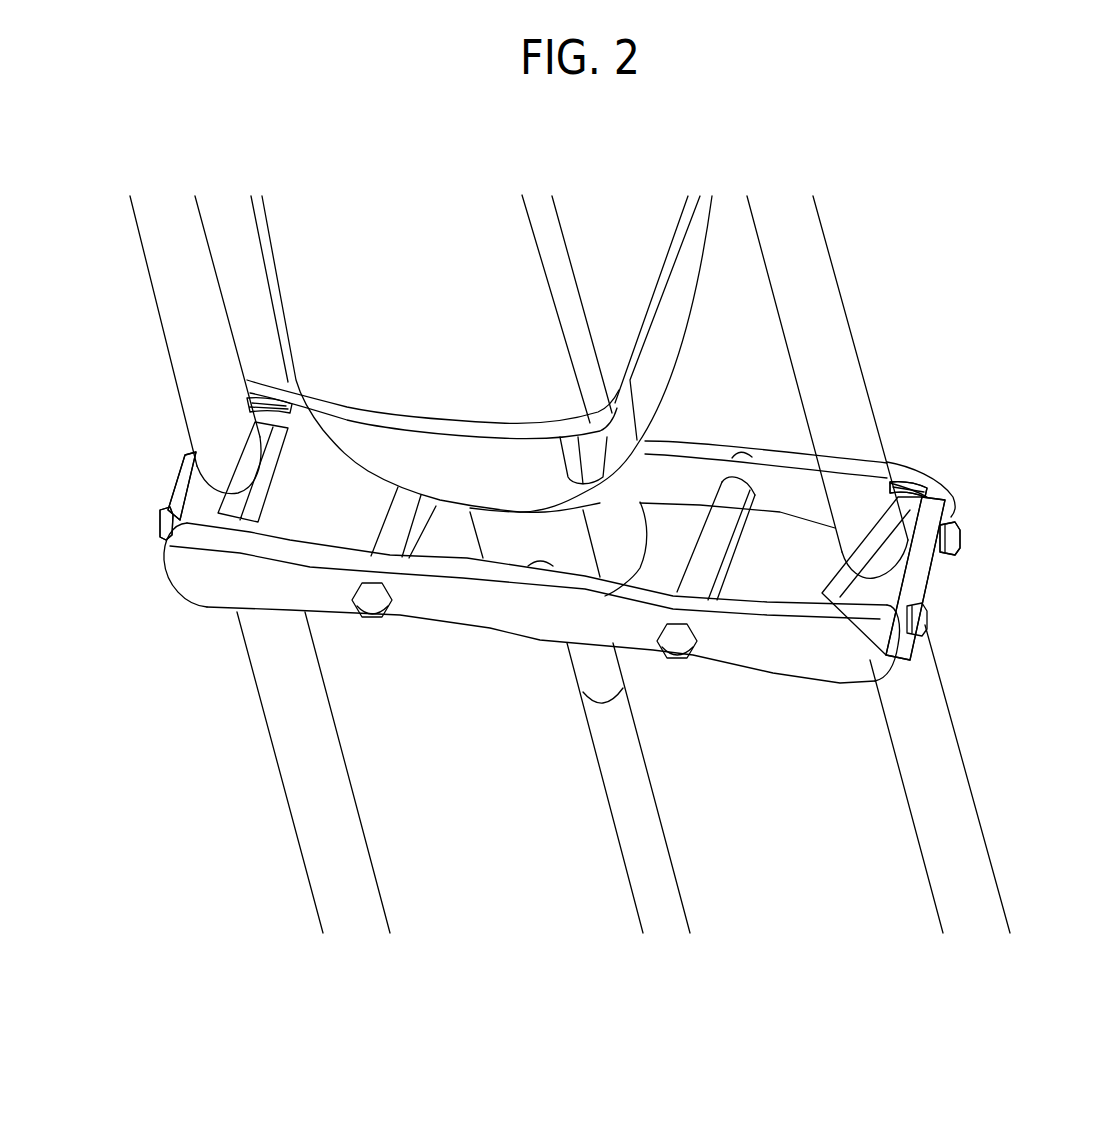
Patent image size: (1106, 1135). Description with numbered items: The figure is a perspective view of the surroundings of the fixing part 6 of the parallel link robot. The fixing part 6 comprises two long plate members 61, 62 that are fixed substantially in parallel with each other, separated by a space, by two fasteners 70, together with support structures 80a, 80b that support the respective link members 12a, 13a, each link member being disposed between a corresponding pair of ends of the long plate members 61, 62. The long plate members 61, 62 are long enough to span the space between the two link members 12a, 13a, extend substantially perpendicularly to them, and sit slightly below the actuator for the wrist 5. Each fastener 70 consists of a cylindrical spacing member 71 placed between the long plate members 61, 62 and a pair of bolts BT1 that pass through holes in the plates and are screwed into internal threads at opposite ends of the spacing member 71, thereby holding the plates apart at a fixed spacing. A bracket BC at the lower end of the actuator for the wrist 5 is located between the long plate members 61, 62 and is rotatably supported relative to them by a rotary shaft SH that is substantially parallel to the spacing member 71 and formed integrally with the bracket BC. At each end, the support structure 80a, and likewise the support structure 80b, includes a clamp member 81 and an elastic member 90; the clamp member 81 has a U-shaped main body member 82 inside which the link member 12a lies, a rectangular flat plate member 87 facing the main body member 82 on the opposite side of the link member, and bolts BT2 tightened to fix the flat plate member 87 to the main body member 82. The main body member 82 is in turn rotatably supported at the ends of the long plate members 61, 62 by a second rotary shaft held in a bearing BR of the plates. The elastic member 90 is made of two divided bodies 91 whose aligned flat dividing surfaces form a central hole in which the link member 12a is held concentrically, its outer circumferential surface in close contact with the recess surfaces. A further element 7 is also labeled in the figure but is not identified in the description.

The actuator for the wrist 5 is at (437, 245).
The fixing part 6 is at (897, 401).
The shaft 7 is at (663, 868).
The link member 12a is at (807, 271).
The link member 13a is at (182, 298).
The long plate member 61 is at (812, 660).
The long plate member 62 is at (690, 455).
The fastener 70 is at (427, 530).
The spacing member 71 is at (392, 525).
The support structure 80a is at (966, 571).
The support structure 80b is at (180, 447).
The clamp member 81 is at (305, 442).
The main body member 82 is at (283, 507).
The flat plate member 87 is at (172, 493).
The elastic member 90 is at (200, 562).
The divided body 91 is at (302, 412).
The bracket BC is at (505, 548).
The rotary shaft SH is at (540, 570).
The bearing BR is at (262, 400).
The bolt BT1 is at (373, 620).
The bolt BT2 is at (167, 527).